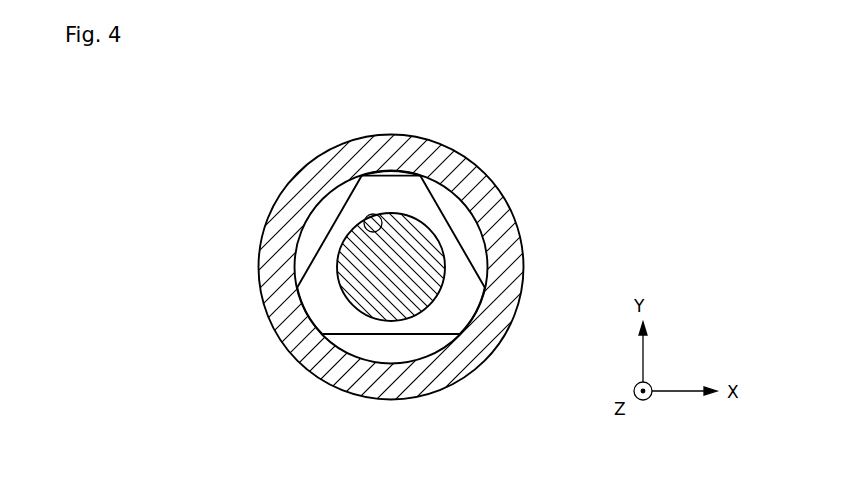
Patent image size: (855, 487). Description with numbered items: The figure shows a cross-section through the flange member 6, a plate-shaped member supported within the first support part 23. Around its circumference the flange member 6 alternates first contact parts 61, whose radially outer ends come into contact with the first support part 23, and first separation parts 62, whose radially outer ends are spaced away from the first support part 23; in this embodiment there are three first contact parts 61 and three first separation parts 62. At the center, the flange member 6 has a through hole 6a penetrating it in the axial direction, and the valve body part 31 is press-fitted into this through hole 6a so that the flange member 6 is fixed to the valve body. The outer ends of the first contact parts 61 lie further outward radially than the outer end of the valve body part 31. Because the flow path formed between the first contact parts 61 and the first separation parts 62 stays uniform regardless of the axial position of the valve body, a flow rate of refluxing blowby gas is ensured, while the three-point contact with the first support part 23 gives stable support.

The flange member 6 is at (407, 260).
The through hole 6a is at (376, 215).
The first contact part 61 is at (397, 183).
The first separation part 62 is at (330, 248).
The first support part 23 is at (453, 168).
The valve body part 31 is at (420, 302).